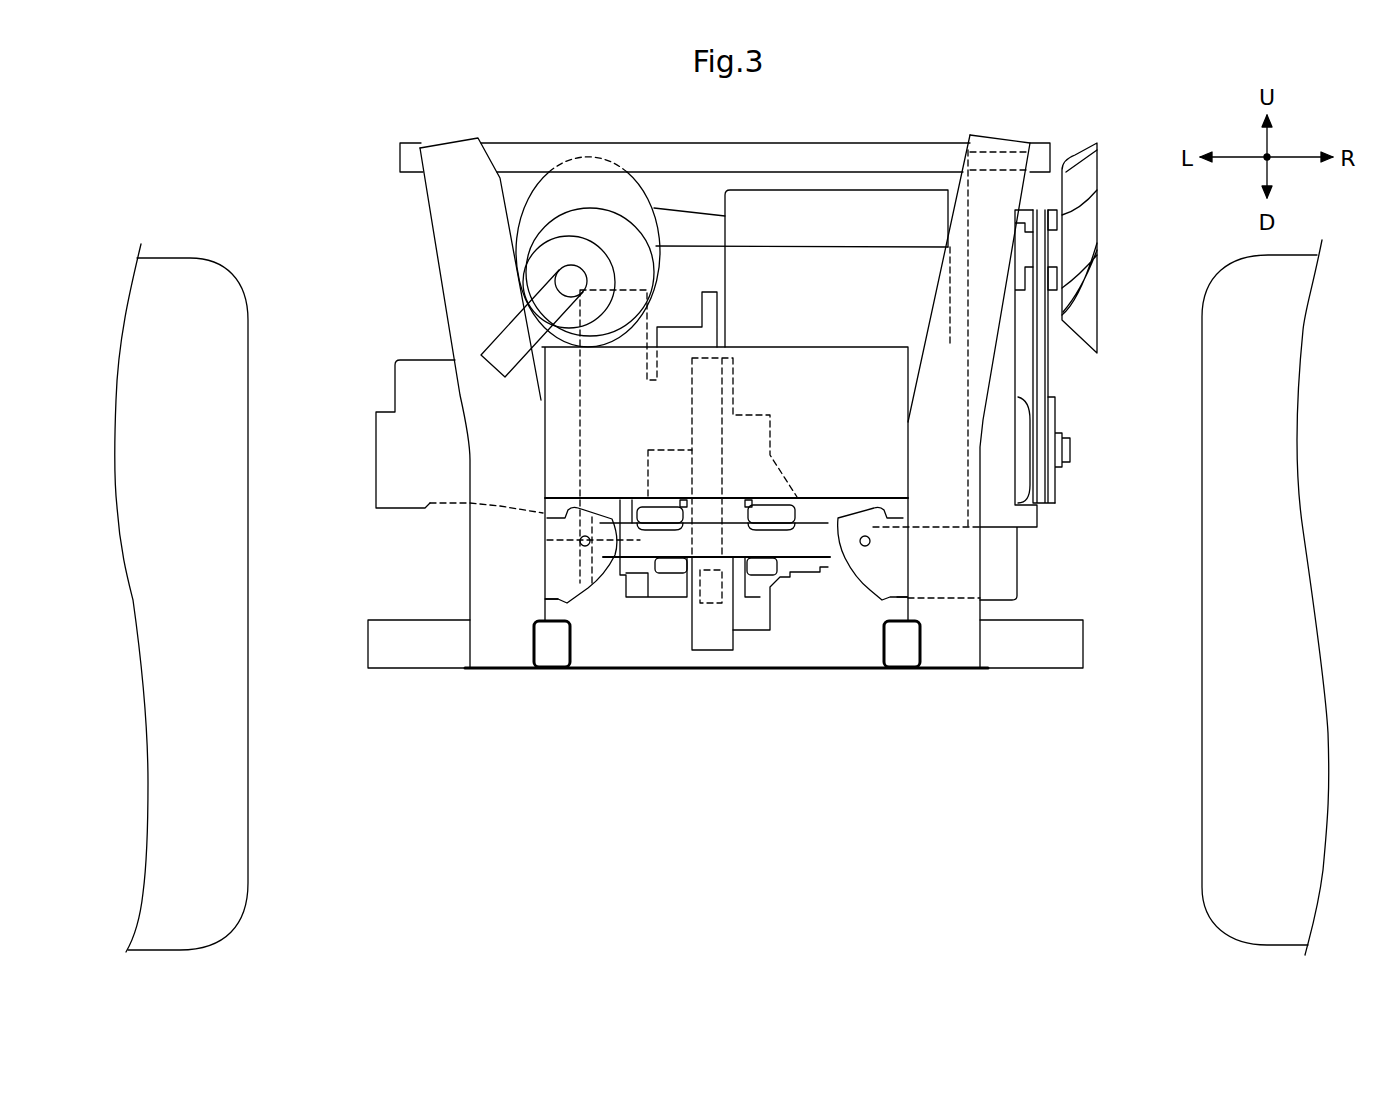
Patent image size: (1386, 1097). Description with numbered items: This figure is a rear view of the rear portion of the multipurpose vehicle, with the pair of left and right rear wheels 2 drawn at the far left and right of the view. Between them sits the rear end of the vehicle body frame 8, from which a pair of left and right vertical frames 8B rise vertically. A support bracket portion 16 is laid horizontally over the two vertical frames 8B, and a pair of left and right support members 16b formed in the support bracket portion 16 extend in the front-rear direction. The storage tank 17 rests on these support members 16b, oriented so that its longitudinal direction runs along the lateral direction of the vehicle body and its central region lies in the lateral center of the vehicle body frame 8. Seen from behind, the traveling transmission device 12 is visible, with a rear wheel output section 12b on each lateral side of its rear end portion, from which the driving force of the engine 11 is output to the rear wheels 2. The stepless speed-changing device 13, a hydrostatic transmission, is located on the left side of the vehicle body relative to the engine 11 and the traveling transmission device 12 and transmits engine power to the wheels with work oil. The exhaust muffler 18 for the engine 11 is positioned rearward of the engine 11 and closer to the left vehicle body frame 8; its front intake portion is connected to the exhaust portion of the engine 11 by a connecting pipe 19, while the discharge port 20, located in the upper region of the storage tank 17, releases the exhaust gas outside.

The rear wheels 2 is at (220, 565).
The vehicle body frame 8 is at (532, 637).
The vertical frames 8B is at (500, 425).
The engine 11 is at (835, 188).
The traveling transmission device 12 is at (712, 668).
The rear wheel output section 12b is at (600, 488).
The stepless speed-changing device 13 is at (410, 460).
The support bracket portion 16 is at (773, 540).
The support members 16b is at (650, 528).
The storage tank 17 is at (805, 345).
The exhaust muffler 18 is at (632, 207).
The connecting pipe 19 is at (697, 230).
The discharge port 20 is at (500, 323).